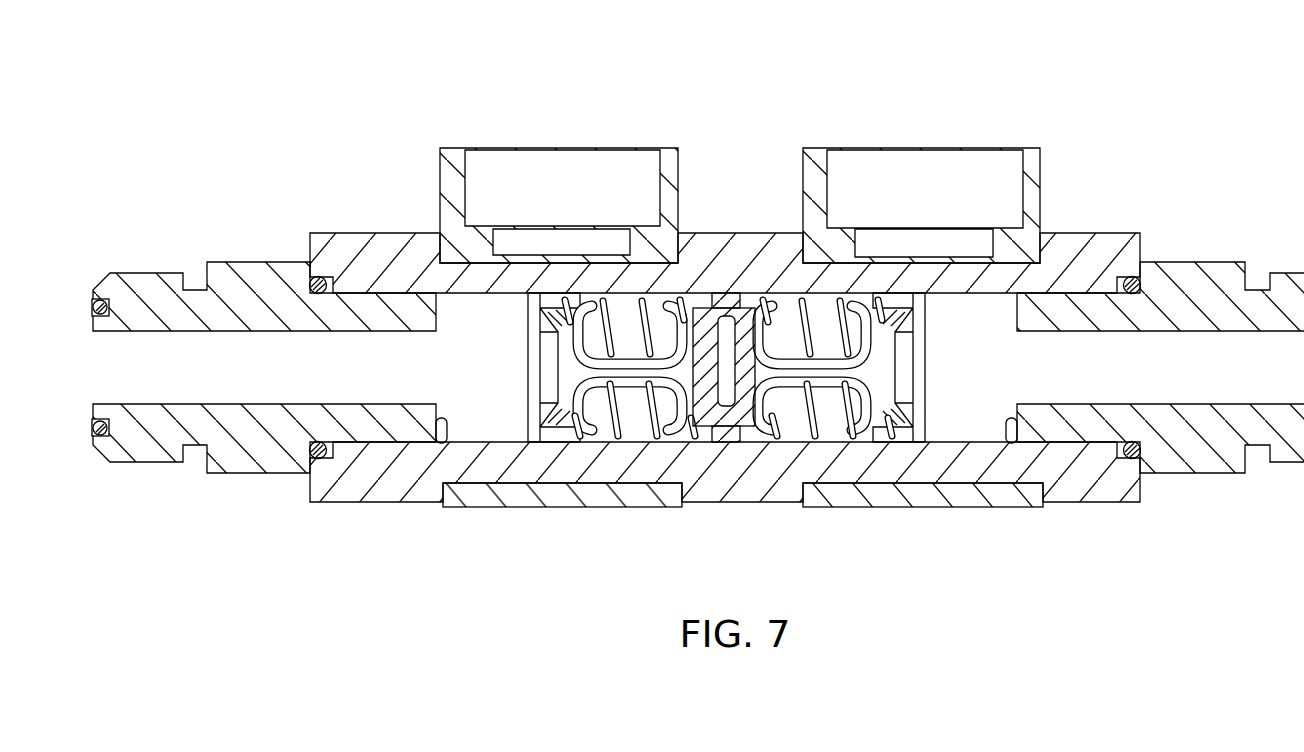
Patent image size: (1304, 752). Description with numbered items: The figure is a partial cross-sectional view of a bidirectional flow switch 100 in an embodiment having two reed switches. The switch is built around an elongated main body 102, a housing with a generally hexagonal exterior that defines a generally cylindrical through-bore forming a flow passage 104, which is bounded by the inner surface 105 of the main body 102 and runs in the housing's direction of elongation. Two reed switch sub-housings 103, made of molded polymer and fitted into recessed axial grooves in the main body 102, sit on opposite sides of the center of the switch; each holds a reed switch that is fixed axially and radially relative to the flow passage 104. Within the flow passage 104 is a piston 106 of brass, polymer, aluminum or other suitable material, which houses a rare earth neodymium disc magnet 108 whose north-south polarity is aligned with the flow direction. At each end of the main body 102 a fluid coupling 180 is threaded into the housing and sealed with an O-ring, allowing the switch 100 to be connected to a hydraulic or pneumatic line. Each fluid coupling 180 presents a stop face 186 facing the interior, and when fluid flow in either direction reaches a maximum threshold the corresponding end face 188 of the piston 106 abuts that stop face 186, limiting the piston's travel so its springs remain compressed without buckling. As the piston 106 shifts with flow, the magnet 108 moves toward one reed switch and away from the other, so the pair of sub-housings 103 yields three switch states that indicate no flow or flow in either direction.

The bidirectional flow switch 100 is at (181, 120).
The main body 102 is at (422, 260).
The reed switch sub-housing 103 is at (455, 160).
The flow passage 104 is at (985, 320).
The inner surface 105 is at (948, 443).
The piston 106 is at (747, 420).
The disc magnet 108 is at (720, 427).
The fluid coupling 180 is at (203, 447).
The stop face 186 is at (438, 442).
The end face 188 is at (527, 417).